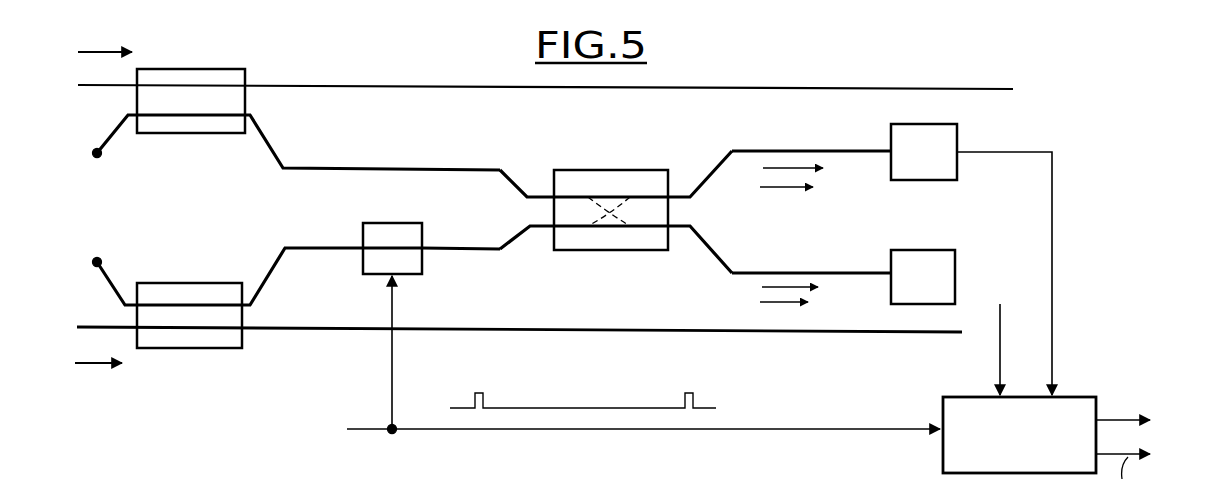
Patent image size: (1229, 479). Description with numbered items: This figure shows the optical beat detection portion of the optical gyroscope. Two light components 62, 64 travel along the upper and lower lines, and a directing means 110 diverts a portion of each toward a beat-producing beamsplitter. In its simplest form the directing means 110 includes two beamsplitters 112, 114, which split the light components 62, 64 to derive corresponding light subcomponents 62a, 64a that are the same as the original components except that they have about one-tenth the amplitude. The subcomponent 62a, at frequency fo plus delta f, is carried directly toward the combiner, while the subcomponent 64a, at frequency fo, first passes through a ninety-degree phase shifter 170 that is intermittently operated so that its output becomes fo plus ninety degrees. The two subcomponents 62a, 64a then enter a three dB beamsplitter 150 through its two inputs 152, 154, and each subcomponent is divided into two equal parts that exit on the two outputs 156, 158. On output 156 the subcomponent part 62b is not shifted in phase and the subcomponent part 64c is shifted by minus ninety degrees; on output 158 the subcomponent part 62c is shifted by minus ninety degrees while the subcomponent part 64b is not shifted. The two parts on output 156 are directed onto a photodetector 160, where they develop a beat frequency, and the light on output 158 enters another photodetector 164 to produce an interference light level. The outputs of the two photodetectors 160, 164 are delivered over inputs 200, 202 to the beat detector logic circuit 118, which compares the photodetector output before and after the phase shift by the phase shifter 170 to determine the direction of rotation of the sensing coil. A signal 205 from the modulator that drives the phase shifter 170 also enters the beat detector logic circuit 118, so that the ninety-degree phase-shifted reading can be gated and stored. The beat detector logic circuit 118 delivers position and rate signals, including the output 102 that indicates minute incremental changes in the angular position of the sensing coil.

The light component 62 is at (90, 54).
The light component 64 is at (89, 366).
The directing means 110 is at (408, 73).
The beamsplitter 112 is at (192, 69).
The beamsplitter 114 is at (191, 283).
The light subcomponent 62a is at (287, 146).
The subcomponent part 62b is at (808, 170).
The subcomponent part 62c is at (802, 290).
The light subcomponent 64a is at (293, 272).
The subcomponent part 64b is at (776, 302).
The subcomponent part 64c is at (785, 188).
The 3 dB beamsplitter 150 is at (583, 170).
The input 152 is at (531, 192).
The input 154 is at (533, 232).
The output 156 is at (692, 192).
The output 158 is at (684, 229).
The photodetector 160 is at (957, 143).
The photodetector 164 is at (948, 259).
The 90° phase shifter 170 is at (422, 258).
The input 200 is at (1052, 354).
The input 202 is at (1000, 366).
The signal from the modulator 205 is at (904, 433).
The beat detector logic circuit 118 is at (1070, 397).
The output 102 is at (1119, 420).